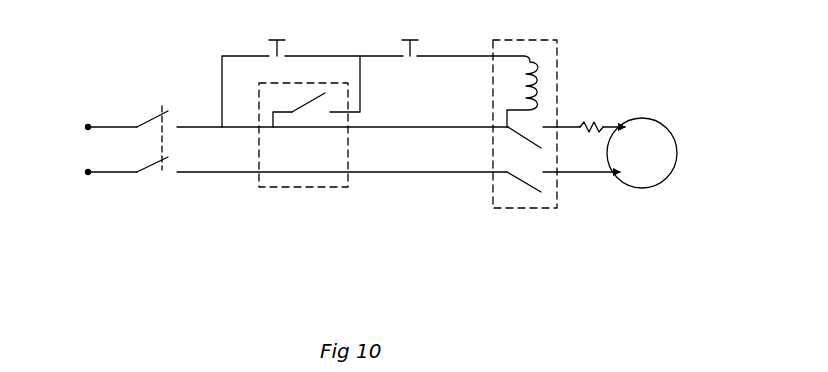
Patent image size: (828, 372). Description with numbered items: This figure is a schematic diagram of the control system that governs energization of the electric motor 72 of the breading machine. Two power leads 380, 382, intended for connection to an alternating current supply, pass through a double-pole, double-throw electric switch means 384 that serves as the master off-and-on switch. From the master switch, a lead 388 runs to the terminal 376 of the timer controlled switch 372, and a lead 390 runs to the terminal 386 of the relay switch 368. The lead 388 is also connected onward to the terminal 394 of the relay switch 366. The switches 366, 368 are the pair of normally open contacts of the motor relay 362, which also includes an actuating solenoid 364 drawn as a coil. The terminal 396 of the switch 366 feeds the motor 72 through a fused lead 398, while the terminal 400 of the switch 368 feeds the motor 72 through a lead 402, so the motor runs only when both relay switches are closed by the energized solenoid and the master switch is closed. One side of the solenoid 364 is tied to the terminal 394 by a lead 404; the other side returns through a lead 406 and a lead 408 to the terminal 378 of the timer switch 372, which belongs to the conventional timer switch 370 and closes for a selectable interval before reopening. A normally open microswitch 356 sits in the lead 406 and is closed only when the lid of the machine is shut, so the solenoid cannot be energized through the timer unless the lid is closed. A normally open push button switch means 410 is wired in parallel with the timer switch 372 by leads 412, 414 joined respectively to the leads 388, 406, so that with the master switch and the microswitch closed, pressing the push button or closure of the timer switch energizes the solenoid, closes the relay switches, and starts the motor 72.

The electric motor 72 is at (680, 150).
The microswitch 356 is at (413, 50).
The motor relay 362 is at (560, 72).
The actuating solenoid 364 is at (536, 72).
The motor relay switch 366 is at (543, 140).
The motor relay switch 368 is at (522, 180).
The timer switch 370 is at (330, 190).
The timer controlled switch 372 is at (310, 98).
The terminal 376 is at (301, 116).
The terminal 378 is at (347, 128).
The power lead 380 is at (118, 127).
The power lead 382 is at (118, 172).
The double-pole, double-throw electric switch means 384 is at (163, 108).
The terminal 386 is at (505, 178).
The lead 388 is at (248, 128).
The lead 390 is at (248, 174).
The terminal 394 is at (502, 142).
The terminal 396 is at (555, 128).
The fused lead 398 is at (600, 127).
The terminal 400 is at (556, 184).
The lead 402 is at (600, 174).
The lead 404 is at (507, 113).
The lead 406 is at (466, 55).
The lead 408 is at (361, 90).
The push button switch means 410 is at (322, 26).
The lead 412 is at (243, 56).
The lead 414 is at (340, 54).